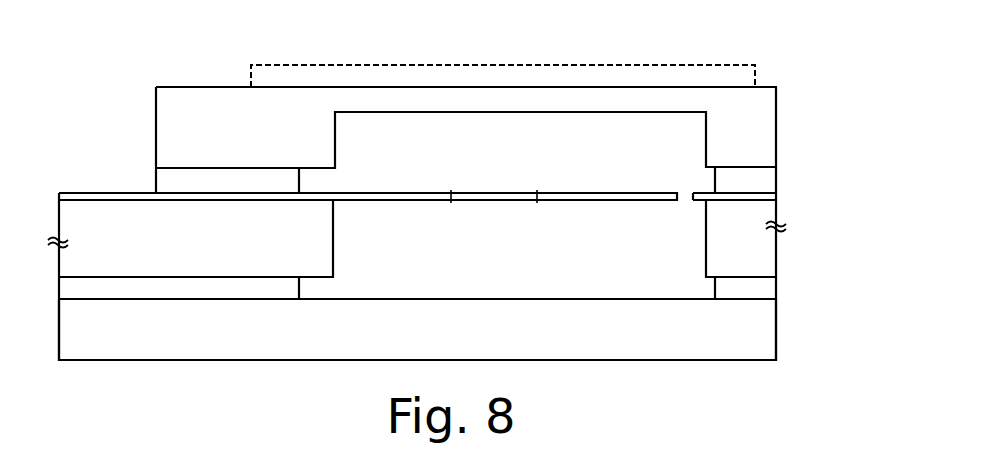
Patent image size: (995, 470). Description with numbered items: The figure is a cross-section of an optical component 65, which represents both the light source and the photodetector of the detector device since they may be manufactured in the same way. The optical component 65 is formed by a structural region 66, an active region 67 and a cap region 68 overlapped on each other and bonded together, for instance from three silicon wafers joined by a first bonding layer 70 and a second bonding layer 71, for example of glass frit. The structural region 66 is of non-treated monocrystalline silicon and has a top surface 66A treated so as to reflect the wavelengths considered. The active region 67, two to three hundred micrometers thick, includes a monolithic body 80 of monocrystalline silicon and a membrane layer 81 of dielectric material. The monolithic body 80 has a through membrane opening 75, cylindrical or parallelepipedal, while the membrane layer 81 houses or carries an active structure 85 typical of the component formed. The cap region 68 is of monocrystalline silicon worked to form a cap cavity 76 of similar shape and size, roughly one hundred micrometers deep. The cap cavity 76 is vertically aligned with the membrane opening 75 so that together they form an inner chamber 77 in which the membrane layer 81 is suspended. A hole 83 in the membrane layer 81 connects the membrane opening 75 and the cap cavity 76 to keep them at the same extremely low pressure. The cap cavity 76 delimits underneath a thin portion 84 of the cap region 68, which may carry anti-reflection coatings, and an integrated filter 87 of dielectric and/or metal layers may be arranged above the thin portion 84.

The optical component 65 is at (121, 84).
The integrated filter 87 is at (402, 67).
The cap region 68 is at (762, 109).
The second bonding layer 71 is at (762, 179).
The cap cavity 76 is at (337, 158).
The inner chamber 77 is at (652, 131).
The thin portion 84 is at (613, 103).
The monolithic body 80 is at (325, 225).
The membrane layer 81 is at (442, 195).
The active structure 85 is at (485, 195).
The hole 83 is at (683, 190).
The membrane opening 75 is at (230, 249).
The active region 67 is at (762, 251).
The first bonding layer 70 is at (753, 285).
The top surface 66A is at (550, 293).
The structural region 66 is at (763, 341).